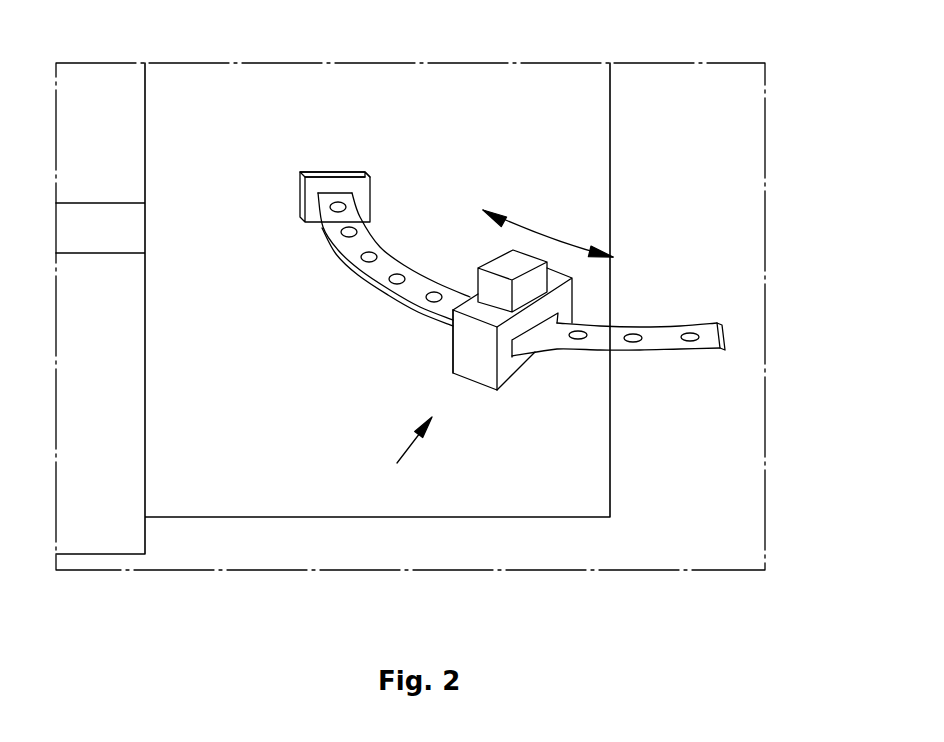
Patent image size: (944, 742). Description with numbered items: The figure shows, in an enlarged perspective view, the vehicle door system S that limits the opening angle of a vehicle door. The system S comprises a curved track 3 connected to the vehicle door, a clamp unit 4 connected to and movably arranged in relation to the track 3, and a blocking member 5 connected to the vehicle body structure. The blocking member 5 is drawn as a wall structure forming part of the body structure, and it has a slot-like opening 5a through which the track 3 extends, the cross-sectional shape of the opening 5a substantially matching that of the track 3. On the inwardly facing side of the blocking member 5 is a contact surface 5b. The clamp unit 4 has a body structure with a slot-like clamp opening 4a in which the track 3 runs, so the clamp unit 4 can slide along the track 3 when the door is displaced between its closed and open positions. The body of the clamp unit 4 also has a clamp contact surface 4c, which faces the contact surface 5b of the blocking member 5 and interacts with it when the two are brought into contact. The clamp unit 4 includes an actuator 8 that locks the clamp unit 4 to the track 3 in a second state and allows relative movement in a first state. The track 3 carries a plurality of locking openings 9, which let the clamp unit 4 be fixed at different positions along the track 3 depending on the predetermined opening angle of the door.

The track 3 is at (667, 322).
The clamp unit 4 is at (475, 347).
The clamp opening 4a is at (517, 350).
The clamp contact surface 4c is at (430, 343).
The blocking member 5 is at (419, 170).
The opening 5a is at (329, 175).
The contact surface 5b is at (280, 158).
The actuator 8 is at (505, 263).
The locking openings 9 is at (693, 323).
The vehicle door system S is at (397, 463).